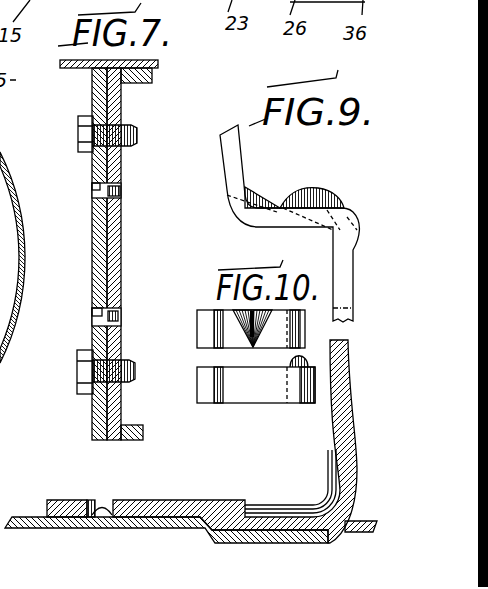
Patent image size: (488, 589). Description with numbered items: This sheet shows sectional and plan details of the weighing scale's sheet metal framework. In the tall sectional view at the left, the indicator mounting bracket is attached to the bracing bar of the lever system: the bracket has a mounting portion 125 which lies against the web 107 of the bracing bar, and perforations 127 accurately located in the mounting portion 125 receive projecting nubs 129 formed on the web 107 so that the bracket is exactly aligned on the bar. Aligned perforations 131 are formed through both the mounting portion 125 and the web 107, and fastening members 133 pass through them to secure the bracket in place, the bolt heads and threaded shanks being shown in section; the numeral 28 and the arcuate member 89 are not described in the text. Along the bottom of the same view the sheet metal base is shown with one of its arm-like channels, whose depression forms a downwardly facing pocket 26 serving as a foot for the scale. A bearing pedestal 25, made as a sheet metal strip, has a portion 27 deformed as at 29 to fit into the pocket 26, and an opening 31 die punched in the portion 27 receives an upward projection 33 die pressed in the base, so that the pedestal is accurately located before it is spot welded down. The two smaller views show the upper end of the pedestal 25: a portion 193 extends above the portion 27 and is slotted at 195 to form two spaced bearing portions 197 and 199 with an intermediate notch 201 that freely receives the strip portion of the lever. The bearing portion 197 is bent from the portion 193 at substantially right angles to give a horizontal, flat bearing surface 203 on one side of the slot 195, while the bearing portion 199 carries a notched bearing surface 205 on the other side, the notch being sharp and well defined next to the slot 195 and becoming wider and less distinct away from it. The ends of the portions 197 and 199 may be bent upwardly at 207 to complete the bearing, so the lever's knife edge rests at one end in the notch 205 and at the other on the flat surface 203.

In FIG. 7, the top flange plate 28 is at (158, 63).
In FIG. 7, the ring member 89 is at (2, 125).
In FIG. 7, the mounting portion 125 is at (93, 232).
In FIG. 7, the web 107 is at (113, 235).
In FIG. 7, the perforations 127 is at (93, 190).
In FIG. 7, the projecting nubs 129 is at (114, 318).
In FIG. 7, the aligned perforations 131 is at (118, 121).
In FIG. 7, the fastening members 133 is at (137, 135).
In FIG. 7, the upward projections 33 is at (97, 502).
In FIG. 7, the opening 31 is at (108, 502).
In FIG. 7, the pedestal portion 27 is at (170, 507).
In FIG. 7, the bearing pedestals 25 is at (337, 440).
In FIG. 7, the pockets 26 is at (245, 542).
In FIG. 7, the deformation 29 is at (267, 520).
In FIG. 9, the upwardly bent ends 207 is at (228, 162).
In FIG. 10, the upwardly bent ends 207 is at (203, 338).
In FIG. 9, the flat bearing surface 203 is at (257, 187).
In FIG. 10, the flat bearing surface 203 is at (267, 388).
In FIG. 9, the notched bearing surface 205 is at (295, 200).
In FIG. 10, the notched bearing surface 205 is at (223, 332).
In FIG. 9, the bearing portion 199 is at (322, 187).
In FIG. 9, the upstanding portion 193 is at (350, 262).
In FIG. 9, the intermediate notch 201 is at (345, 265).
In FIG. 9, the bearing portion 197 is at (245, 228).
In FIG. 10, the slot 195 is at (248, 358).